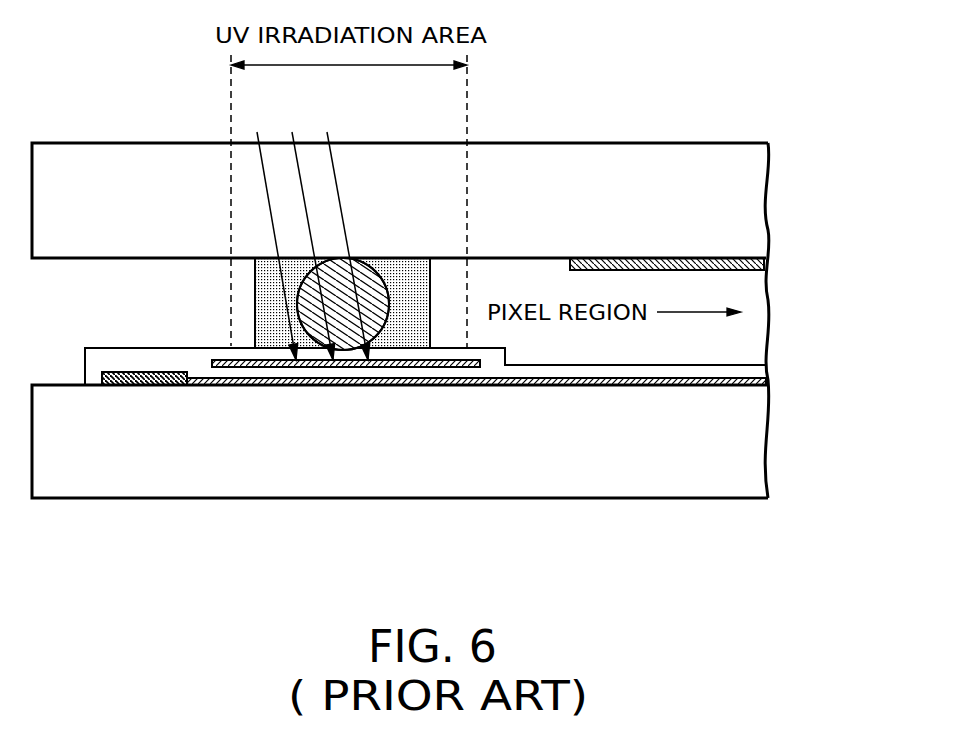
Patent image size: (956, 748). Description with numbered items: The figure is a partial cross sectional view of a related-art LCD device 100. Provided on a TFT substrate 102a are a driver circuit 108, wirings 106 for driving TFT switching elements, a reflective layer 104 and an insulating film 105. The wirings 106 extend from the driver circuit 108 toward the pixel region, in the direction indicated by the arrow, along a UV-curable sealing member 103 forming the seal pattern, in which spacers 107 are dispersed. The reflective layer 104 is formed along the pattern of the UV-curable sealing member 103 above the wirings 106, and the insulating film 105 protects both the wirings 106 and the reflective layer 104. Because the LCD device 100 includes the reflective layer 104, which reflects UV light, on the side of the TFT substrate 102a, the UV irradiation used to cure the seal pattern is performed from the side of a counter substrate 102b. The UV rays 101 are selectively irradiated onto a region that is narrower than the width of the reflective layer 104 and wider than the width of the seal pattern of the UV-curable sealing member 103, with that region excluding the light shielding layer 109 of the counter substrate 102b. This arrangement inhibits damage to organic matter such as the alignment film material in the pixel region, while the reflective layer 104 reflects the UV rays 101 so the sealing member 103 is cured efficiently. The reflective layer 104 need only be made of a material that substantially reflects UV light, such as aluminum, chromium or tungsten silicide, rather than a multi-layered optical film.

The LCD device 100 is at (454, 383).
The UV rays 101 is at (337, 183).
The TFT substrate 102a is at (745, 443).
The counter substrate 102b is at (745, 190).
The UV-curable sealing member 103 is at (418, 337).
The reflective layer 104 is at (340, 367).
The insulating film 105 is at (745, 380).
The wirings 106 is at (661, 386).
The spacer 107 is at (357, 270).
The driver circuit 108 is at (130, 385).
The light shielding layer 109 is at (770, 258).